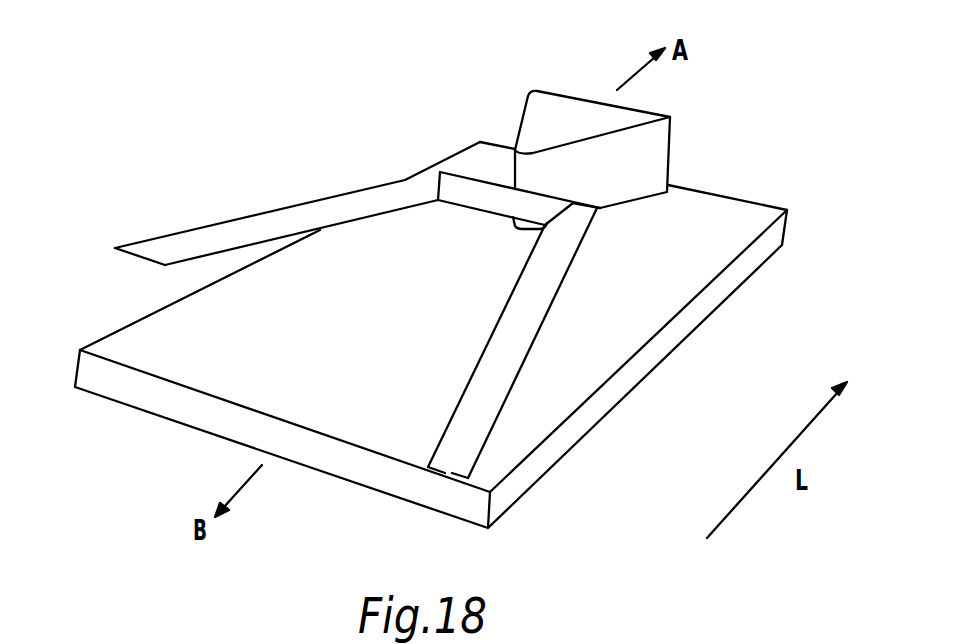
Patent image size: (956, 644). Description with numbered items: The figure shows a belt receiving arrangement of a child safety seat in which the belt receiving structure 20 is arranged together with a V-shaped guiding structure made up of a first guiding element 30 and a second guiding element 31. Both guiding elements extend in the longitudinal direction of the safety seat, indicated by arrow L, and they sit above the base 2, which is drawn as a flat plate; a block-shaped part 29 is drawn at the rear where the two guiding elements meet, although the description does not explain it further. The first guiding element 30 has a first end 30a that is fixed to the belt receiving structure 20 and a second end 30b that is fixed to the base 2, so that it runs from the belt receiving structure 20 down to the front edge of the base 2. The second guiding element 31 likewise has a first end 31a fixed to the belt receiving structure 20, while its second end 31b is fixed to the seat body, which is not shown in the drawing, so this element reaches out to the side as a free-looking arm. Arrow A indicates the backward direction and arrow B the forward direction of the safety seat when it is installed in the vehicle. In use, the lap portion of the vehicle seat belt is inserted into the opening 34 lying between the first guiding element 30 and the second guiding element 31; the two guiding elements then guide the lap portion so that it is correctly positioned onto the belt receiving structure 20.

The base 2 is at (416, 356).
The belt receiving structure 20 is at (431, 298).
The contact block 29 is at (575, 108).
The first guiding element 30 is at (619, 356).
The first end of the first guiding element 30a is at (583, 222).
The second end of the first guiding element 30b is at (452, 465).
The second guiding element 31 is at (326, 193).
The first end of the second guiding element 31a is at (502, 200).
The second end of the second guiding element 31b is at (162, 248).
The opening 34 is at (245, 323).